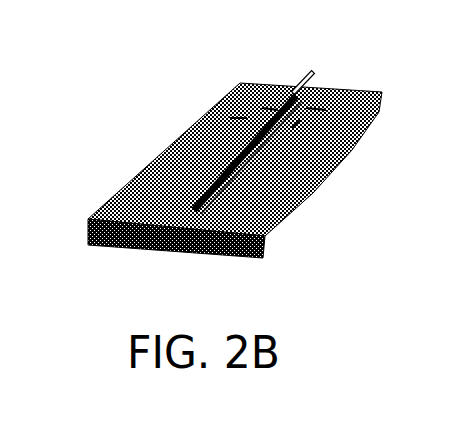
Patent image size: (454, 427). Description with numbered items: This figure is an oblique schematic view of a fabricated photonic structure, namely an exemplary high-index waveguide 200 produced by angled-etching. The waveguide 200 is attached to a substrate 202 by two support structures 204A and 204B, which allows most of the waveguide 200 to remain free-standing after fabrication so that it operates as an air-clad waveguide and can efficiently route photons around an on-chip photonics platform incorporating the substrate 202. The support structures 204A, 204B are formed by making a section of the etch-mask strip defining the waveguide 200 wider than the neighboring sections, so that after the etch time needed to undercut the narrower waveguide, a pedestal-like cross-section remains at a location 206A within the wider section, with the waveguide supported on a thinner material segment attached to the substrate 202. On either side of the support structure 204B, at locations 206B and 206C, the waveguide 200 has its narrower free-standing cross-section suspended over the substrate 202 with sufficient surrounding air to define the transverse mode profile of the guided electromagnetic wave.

The high-index waveguide 200 is at (229, 165).
The substrate 202 is at (130, 202).
The support structure 204A is at (223, 178).
The support structure 204B is at (262, 143).
The location within the wider section 206A is at (253, 103).
The location on one side of support structure 206B is at (327, 93).
The location on other side of support structure 206C is at (297, 127).